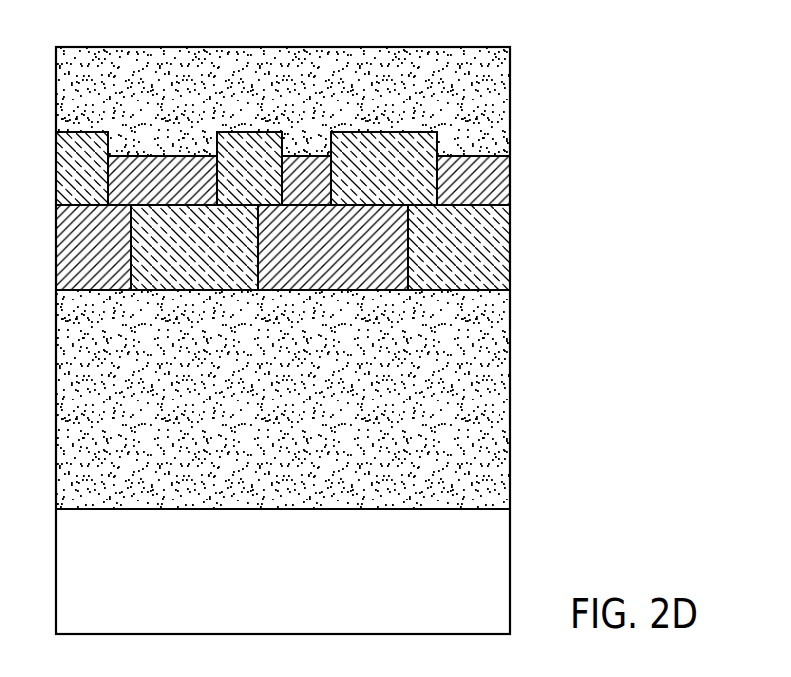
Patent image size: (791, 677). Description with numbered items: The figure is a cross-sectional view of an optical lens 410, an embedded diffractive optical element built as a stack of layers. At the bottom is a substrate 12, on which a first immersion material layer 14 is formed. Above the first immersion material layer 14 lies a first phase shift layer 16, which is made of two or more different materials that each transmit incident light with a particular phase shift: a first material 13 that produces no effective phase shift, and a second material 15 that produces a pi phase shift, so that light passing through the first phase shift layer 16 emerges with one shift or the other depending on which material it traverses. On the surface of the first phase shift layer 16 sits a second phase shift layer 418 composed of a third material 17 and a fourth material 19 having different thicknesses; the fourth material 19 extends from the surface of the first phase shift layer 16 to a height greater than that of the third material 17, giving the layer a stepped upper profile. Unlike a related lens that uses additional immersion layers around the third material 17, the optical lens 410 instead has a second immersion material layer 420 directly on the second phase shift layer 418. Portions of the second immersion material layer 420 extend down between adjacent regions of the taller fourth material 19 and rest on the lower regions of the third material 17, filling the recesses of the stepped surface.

The optical lens 410 is at (369, 336).
The second immersion material layer 420 is at (494, 90).
The second phase shift layer 418 is at (304, 132).
The third material 17 is at (152, 157).
The fourth material 19 is at (64, 157).
The first phase shift layer 16 is at (298, 280).
The first material 13 is at (75, 248).
The second material 15 is at (165, 270).
The first immersion material layer 14 is at (460, 400).
The substrate 12 is at (475, 543).